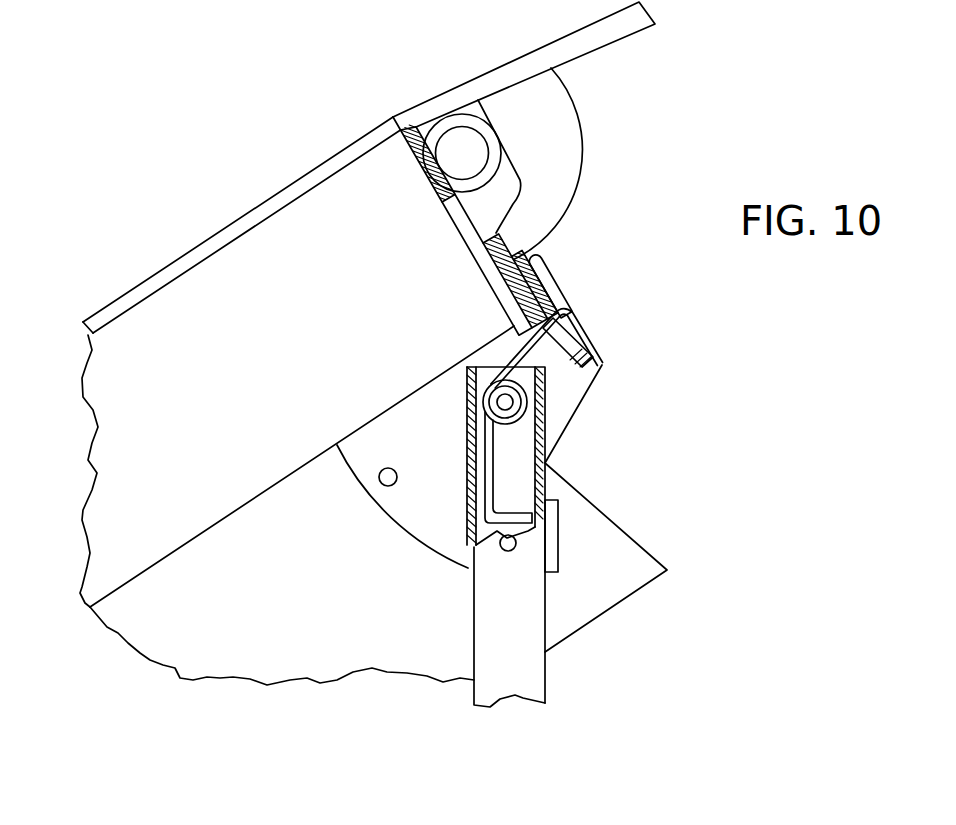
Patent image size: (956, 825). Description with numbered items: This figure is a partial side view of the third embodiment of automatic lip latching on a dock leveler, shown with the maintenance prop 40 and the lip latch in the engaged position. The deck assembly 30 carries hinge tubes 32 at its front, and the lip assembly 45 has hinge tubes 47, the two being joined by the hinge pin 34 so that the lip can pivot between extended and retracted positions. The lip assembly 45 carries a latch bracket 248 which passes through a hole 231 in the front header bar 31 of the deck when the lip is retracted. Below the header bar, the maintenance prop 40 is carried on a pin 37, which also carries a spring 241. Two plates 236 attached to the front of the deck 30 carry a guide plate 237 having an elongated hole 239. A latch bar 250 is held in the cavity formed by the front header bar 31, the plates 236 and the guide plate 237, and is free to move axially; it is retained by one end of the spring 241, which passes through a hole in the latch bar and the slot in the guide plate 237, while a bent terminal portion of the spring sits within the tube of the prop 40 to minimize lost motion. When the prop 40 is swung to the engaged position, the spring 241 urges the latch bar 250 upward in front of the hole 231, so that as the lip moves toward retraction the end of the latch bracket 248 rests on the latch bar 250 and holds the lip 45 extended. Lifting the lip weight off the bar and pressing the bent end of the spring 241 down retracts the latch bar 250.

The deck assembly 30 is at (268, 206).
The front header bar 31 is at (416, 198).
The hinge tubes 32 is at (428, 143).
The hinge tubes 47 is at (428, 143).
The hinge pin 34 is at (462, 133).
The lip assembly 45 is at (610, 30).
The latch bracket 248 is at (572, 148).
The hole 231 is at (472, 262).
The guide plate 237 is at (552, 275).
The elongated hole 239 is at (578, 338).
The spring 241 is at (582, 318).
The latch bar 250 is at (602, 367).
The plates 236 is at (583, 407).
The pin 37 is at (510, 406).
The maintenance prop 40 is at (537, 667).